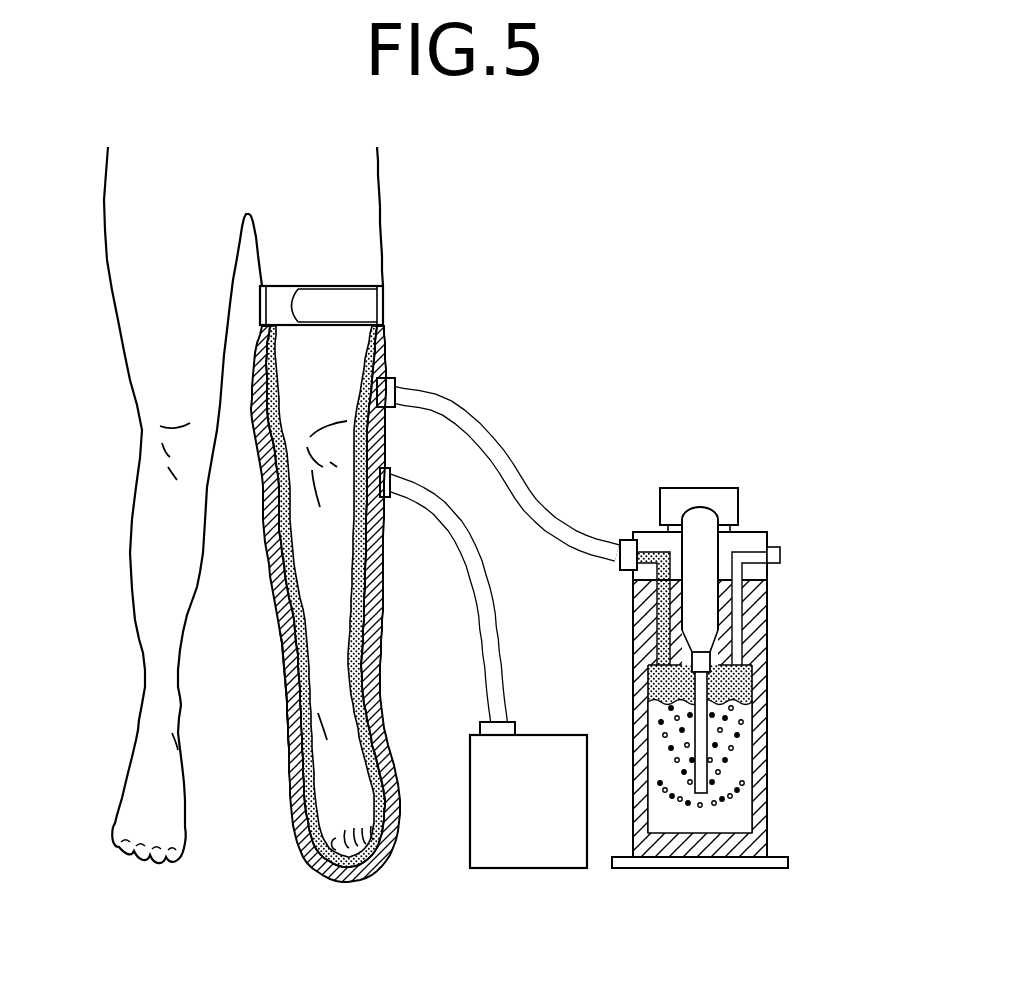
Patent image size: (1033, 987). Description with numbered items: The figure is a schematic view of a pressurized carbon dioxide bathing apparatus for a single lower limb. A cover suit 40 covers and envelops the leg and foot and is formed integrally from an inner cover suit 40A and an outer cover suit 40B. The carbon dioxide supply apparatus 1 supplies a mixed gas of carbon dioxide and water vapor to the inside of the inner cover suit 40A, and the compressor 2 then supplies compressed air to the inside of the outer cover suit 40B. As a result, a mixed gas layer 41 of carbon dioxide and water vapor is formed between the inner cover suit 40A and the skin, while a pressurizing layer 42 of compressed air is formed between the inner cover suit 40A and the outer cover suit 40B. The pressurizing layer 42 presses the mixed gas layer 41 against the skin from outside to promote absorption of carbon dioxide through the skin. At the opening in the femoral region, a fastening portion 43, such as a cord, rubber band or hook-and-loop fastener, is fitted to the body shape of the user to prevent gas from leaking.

The carbon dioxide supply apparatus 1 is at (723, 488).
The compressor 2 is at (538, 735).
The cover suit 40 is at (366, 570).
The inner cover suit 40A is at (292, 658).
The outer cover suit 40B is at (290, 714).
The mixed gas layer 41 is at (338, 860).
The pressurizing layer 42 is at (368, 867).
The fastening portion 43 is at (385, 312).